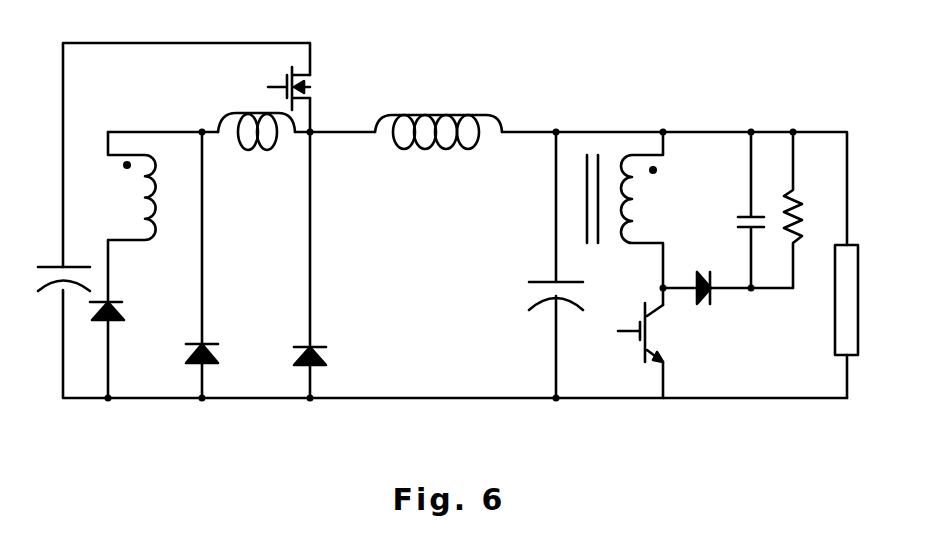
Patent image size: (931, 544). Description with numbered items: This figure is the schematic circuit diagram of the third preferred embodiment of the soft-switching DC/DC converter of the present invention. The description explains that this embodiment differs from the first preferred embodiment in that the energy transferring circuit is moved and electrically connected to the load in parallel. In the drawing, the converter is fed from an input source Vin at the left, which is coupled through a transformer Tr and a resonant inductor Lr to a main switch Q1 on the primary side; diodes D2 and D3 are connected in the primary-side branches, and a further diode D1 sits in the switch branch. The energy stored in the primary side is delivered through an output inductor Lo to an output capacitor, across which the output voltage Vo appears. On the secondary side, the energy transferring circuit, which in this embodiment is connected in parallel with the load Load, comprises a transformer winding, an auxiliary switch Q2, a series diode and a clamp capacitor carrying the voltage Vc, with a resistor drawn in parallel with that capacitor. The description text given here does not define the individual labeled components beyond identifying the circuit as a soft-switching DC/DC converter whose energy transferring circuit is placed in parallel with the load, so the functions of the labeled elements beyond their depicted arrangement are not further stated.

The input voltage source Vin is at (59, 259).
The transformer Tr is at (385, 265).
The resonant inductor Lr is at (256, 140).
The main switch (MOSFET) Q1 is at (271, 88).
The output inductor Lo is at (438, 141).
The output capacitor / output voltage Vo is at (537, 265).
The diode D1 is at (293, 351).
The diode D2 is at (125, 319).
The diode D3 is at (210, 340).
The clamp capacitor / clamp voltage Vc is at (728, 218).
The auxiliary switch (IGBT) Q2 is at (636, 350).
The load Load is at (821, 278).